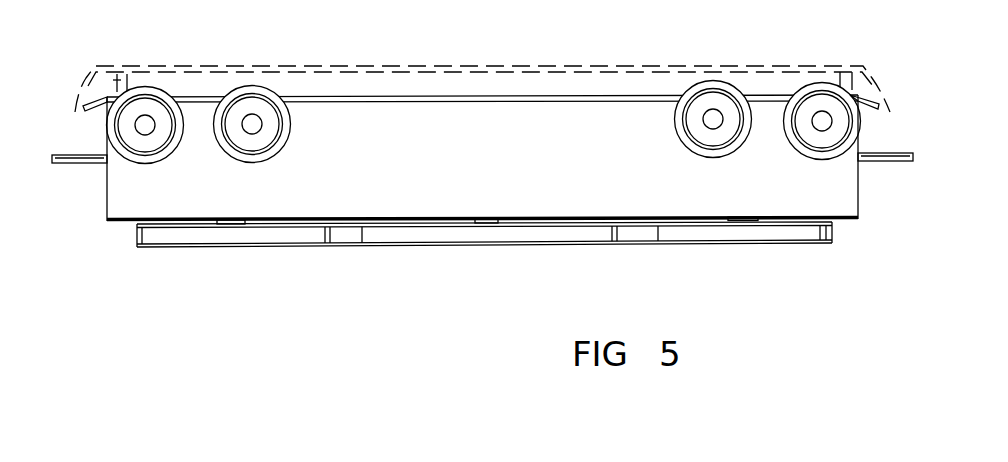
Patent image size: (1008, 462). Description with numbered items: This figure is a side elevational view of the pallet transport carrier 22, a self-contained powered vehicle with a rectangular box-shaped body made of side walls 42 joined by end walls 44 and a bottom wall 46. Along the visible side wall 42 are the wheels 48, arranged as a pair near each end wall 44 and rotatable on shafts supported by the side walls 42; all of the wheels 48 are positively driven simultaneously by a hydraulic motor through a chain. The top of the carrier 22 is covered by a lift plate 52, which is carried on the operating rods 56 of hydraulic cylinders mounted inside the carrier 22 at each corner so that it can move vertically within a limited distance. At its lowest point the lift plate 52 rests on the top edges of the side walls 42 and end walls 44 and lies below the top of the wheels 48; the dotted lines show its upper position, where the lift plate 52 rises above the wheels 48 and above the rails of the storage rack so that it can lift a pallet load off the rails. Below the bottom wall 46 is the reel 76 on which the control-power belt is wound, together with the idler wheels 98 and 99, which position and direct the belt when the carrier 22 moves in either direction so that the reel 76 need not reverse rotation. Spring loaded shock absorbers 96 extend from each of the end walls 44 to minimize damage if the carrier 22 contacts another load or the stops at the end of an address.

The pallet transport carrier 22 is at (494, 46).
The side walls 42 is at (473, 173).
The end walls 44 is at (106, 203).
The bottom wall 46 is at (128, 222).
The wheels 48 is at (172, 152).
The lift plate 52 is at (565, 95).
The operating rods 56 is at (484, 116).
The reel 76 is at (494, 246).
The shock absorbers 96 is at (76, 165).
The idler wheel 98 is at (279, 248).
The idler wheel 99 is at (731, 244).